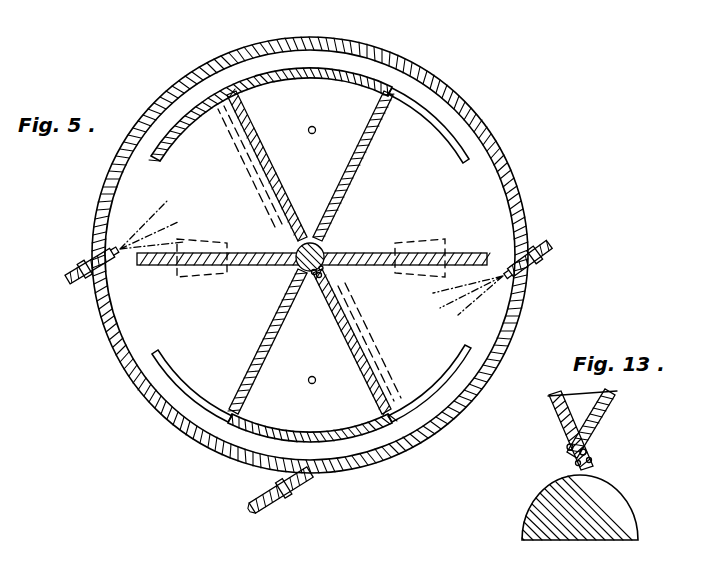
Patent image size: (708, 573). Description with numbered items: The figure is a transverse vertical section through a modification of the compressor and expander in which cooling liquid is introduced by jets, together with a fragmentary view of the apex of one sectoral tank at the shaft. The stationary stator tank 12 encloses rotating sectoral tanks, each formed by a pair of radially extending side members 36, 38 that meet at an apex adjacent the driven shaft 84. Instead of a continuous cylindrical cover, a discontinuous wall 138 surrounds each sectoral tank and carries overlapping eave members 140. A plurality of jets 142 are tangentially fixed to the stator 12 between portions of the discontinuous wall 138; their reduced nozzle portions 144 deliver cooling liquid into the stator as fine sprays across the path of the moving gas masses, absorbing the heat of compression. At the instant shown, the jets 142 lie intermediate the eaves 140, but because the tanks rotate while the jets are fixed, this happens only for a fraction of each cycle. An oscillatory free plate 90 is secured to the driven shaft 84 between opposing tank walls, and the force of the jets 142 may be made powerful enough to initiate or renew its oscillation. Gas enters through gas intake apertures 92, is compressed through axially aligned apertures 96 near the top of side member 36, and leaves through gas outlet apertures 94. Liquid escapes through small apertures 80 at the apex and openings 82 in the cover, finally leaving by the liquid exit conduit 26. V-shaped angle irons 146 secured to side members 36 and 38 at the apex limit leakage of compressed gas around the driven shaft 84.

In FIG. 5, the stator tank 12 is at (462, 102).
In FIG. 5, the liquid exit conduit 26 is at (276, 505).
In FIG. 5, the radially extending side member 36 is at (262, 160).
In FIG. 13, the radially extending side member 36 is at (553, 406).
In FIG. 5, the radially extending side member 38 is at (356, 158).
In FIG. 13, the radially extending side member 38 is at (606, 407).
In FIG. 5, the axially disposed small apertures 80 is at (268, 366).
In FIG. 5, the axially disposed small openings 82 is at (318, 70).
In FIG. 5, the driven shaft 84 is at (322, 250).
In FIG. 13, the driven shaft 84 is at (618, 492).
In FIG. 5, the oscillatory free plate 90 is at (262, 266).
In FIG. 5, the gas intake apertures 92 is at (440, 239).
In FIG. 5, the gas outlet apertures 94 is at (315, 132).
In FIG. 5, the axially aligned apertures 96 is at (262, 122).
In FIG. 5, the discontinuous wall 138 is at (394, 82).
In FIG. 5, the overlapping eave members 140 is at (466, 152).
In FIG. 5, the jets 142 is at (90, 276).
In FIG. 5, the reduced nozzle portions 144 is at (120, 248).
In FIG. 5, the V-shaped angle irons 146 is at (323, 272).
In FIG. 13, the V-shaped angle irons 146 is at (590, 464).